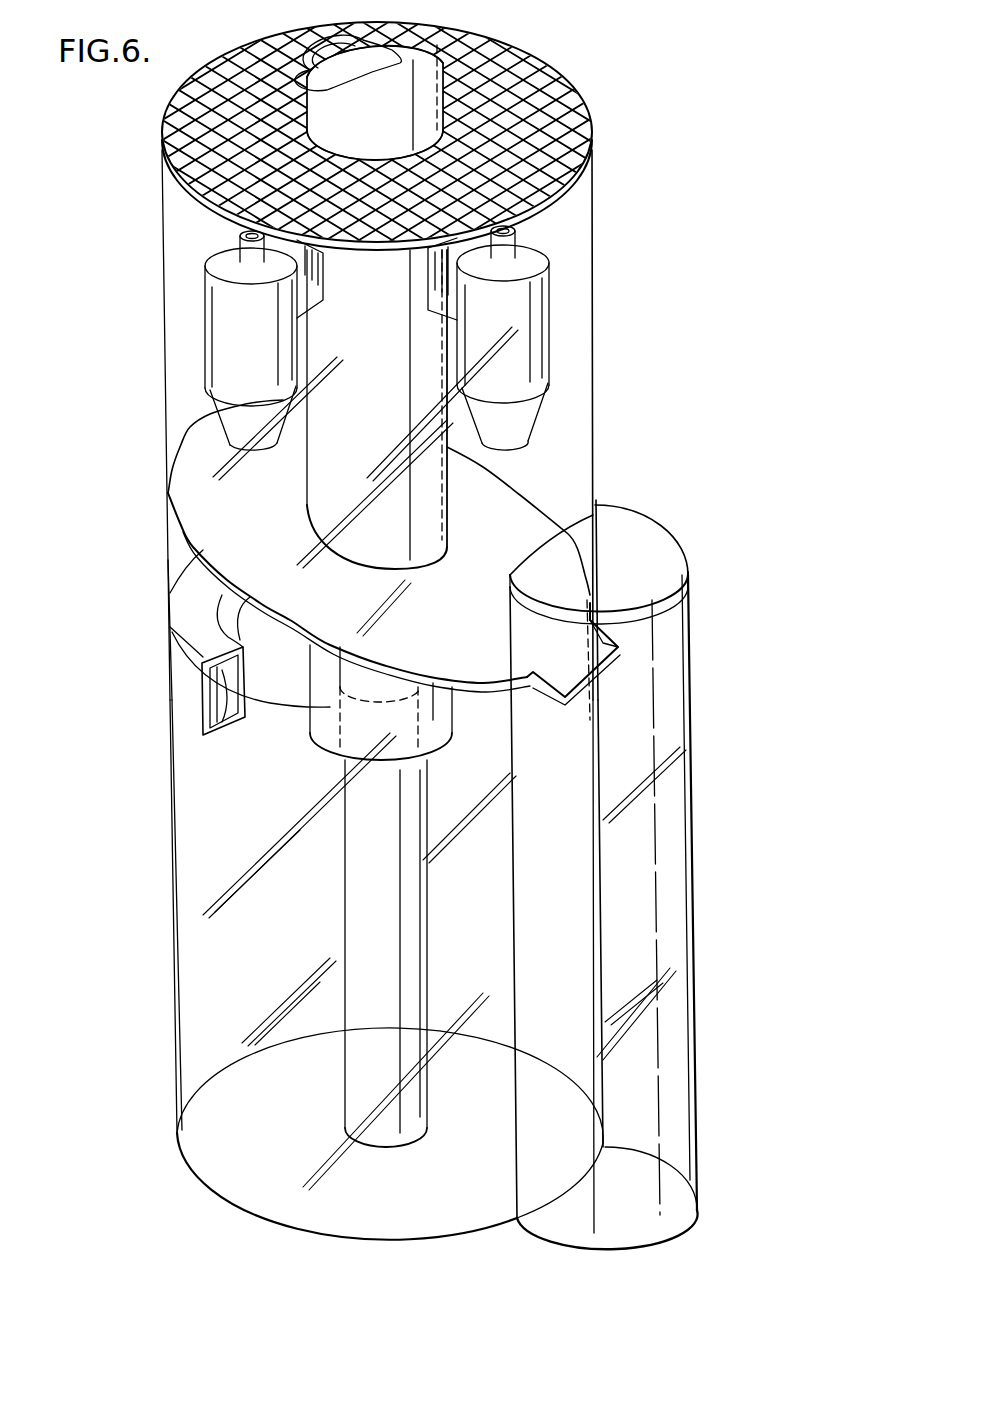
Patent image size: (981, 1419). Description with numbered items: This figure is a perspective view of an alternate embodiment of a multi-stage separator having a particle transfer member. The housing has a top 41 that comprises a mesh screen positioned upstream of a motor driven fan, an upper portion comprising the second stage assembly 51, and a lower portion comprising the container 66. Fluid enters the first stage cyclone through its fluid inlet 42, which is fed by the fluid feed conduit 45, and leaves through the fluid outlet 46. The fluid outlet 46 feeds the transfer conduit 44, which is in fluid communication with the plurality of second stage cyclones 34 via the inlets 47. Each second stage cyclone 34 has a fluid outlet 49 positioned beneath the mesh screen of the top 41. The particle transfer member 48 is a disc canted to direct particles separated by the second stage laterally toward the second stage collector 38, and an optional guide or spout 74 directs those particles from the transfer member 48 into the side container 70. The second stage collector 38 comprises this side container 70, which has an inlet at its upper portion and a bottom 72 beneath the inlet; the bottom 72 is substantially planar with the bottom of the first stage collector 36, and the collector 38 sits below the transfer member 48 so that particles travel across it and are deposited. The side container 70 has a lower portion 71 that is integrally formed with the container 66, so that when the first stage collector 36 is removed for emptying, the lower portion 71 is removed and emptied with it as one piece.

The second stage cyclones 34 is at (540, 318).
The first stage collector 36 is at (210, 1128).
The second stage collector 38 is at (670, 857).
The top 41 is at (543, 72).
The fluid inlet 42 is at (220, 712).
The transfer conduit 44 is at (327, 458).
The fluid feed conduit 45 is at (345, 878).
The fluid outlet 46 is at (323, 748).
The inlets 47 is at (313, 283).
The particle transfer member 48 is at (523, 523).
The fluid outlet 49 is at (508, 243).
The second stage assembly 51 is at (165, 352).
The container 66 is at (178, 975).
The side container 70 is at (690, 905).
The lower portion 71 is at (690, 980).
The bottom 72 is at (665, 1192).
The guide or spout 74 is at (605, 643).